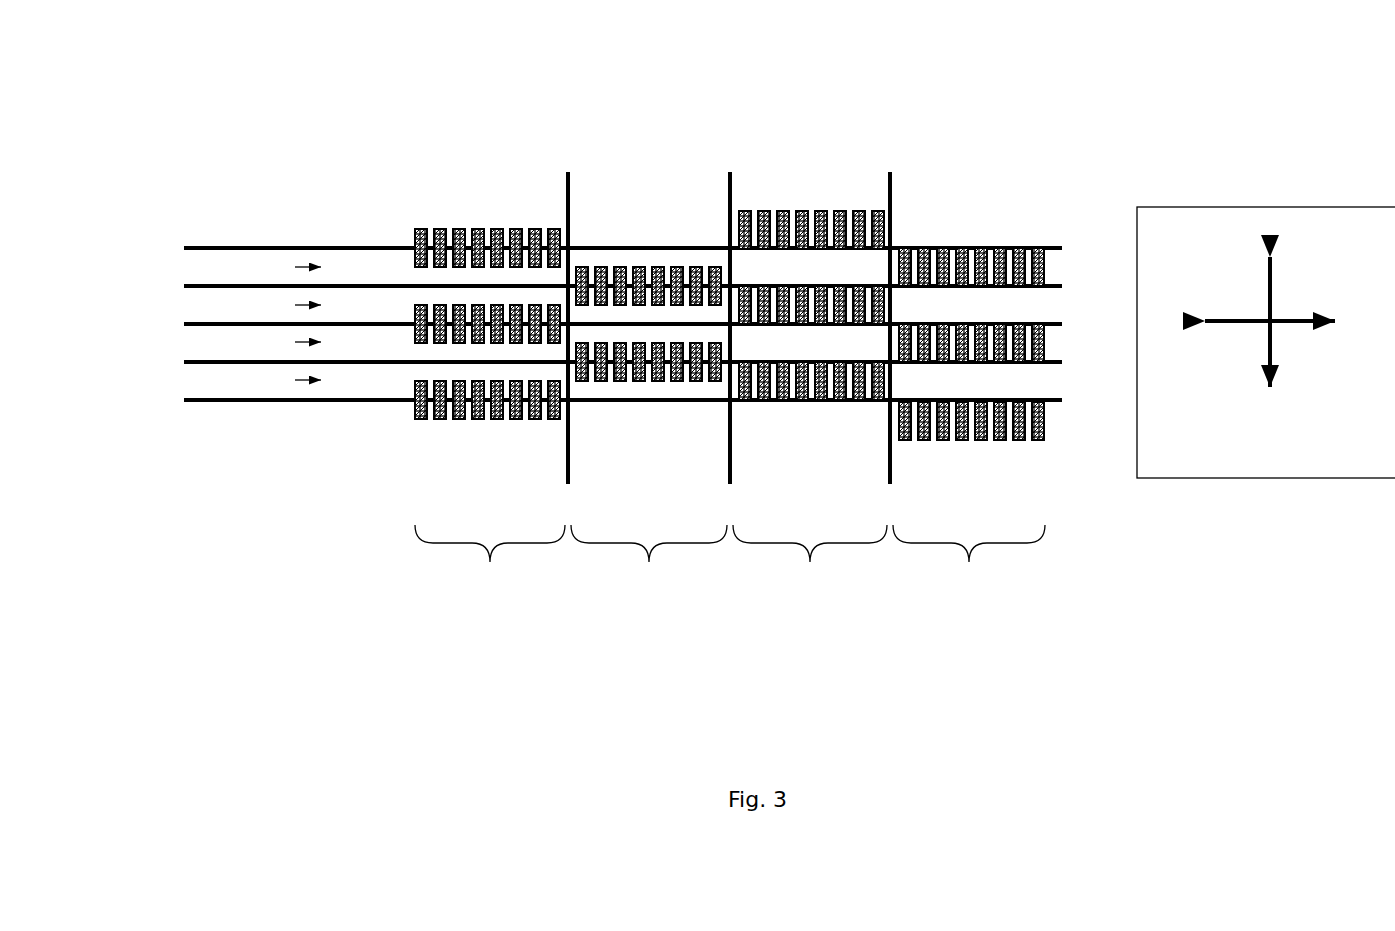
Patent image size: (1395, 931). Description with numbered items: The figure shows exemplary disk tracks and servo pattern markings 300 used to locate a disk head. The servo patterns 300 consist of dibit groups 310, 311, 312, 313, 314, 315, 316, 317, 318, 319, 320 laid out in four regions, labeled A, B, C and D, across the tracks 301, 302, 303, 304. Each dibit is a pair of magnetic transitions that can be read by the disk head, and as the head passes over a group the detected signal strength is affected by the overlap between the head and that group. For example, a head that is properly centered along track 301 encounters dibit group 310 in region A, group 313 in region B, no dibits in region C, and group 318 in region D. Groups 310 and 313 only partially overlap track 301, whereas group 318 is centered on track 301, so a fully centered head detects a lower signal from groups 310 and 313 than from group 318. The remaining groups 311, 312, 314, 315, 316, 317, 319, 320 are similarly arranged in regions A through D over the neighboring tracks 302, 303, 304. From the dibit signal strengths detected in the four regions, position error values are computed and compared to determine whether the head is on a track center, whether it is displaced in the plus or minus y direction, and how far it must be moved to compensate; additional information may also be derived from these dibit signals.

The servo pattern markings 300 is at (207, 75).
The track 301 is at (166, 267).
The track 302 is at (166, 305).
The track 303 is at (166, 342).
The track 304 is at (166, 380).
The dibit group 310 is at (417, 220).
The dibit group 311 is at (410, 303).
The dibit group 312 is at (406, 423).
The dibit group 313 is at (652, 262).
The dibit group 314 is at (650, 388).
The dibit group 315 is at (837, 208).
The dibit group 316 is at (757, 274).
The dibit group 317 is at (810, 412).
The dibit group 318 is at (985, 240).
The dibit group 319 is at (977, 313).
The dibit group 320 is at (985, 455).